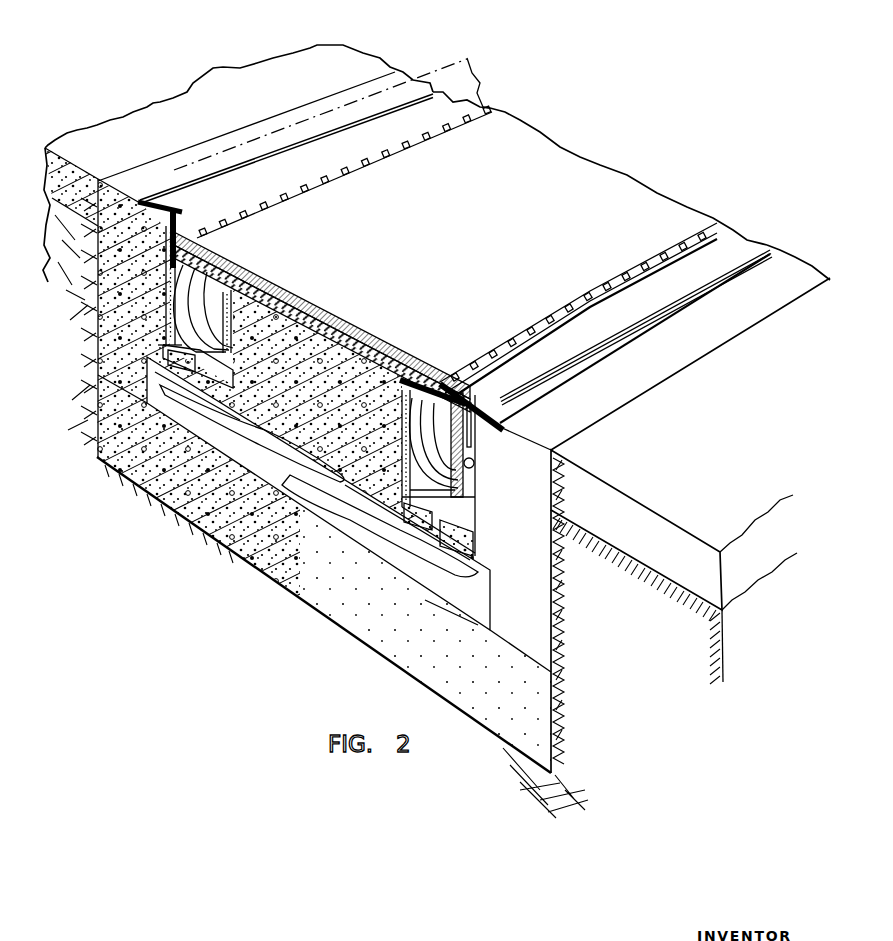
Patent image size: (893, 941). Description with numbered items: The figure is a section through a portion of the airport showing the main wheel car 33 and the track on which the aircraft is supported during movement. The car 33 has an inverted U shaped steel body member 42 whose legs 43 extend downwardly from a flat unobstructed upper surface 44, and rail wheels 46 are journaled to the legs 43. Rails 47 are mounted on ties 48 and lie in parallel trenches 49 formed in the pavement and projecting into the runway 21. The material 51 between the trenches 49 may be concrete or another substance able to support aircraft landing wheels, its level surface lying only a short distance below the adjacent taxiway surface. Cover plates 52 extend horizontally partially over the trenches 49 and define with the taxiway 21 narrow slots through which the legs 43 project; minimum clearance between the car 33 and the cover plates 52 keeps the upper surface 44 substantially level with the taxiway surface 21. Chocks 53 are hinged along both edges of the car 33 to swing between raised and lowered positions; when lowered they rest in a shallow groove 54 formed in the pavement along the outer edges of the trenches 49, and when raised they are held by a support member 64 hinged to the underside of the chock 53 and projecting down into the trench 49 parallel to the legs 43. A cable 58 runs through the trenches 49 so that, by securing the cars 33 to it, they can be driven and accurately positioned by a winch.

The runway 21 is at (347, 66).
The chocks 53 is at (437, 105).
The body member 42 is at (607, 176).
The upper surface 44 is at (655, 213).
The main wheel car 33 is at (450, 259).
The groove 54 is at (194, 234).
The support member 64 is at (215, 258).
The trenches 49 is at (165, 338).
The material 51 is at (380, 380).
The rail wheels 46 is at (432, 423).
The cover plates 52 is at (398, 402).
The cable 58 is at (233, 384).
The legs 43 is at (466, 453).
The rails 47 is at (468, 523).
The ties 48 is at (490, 573).